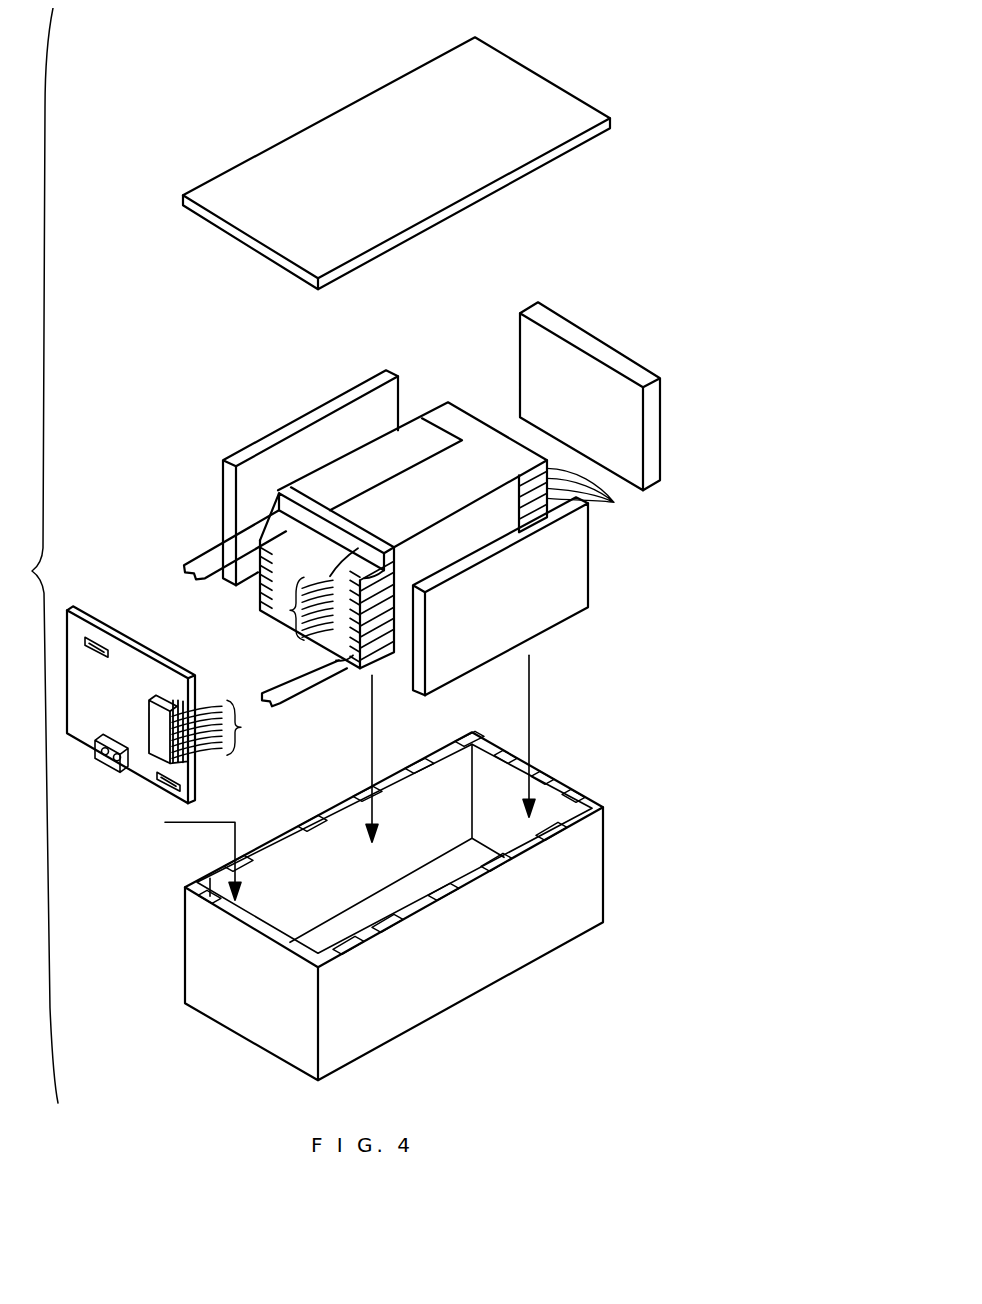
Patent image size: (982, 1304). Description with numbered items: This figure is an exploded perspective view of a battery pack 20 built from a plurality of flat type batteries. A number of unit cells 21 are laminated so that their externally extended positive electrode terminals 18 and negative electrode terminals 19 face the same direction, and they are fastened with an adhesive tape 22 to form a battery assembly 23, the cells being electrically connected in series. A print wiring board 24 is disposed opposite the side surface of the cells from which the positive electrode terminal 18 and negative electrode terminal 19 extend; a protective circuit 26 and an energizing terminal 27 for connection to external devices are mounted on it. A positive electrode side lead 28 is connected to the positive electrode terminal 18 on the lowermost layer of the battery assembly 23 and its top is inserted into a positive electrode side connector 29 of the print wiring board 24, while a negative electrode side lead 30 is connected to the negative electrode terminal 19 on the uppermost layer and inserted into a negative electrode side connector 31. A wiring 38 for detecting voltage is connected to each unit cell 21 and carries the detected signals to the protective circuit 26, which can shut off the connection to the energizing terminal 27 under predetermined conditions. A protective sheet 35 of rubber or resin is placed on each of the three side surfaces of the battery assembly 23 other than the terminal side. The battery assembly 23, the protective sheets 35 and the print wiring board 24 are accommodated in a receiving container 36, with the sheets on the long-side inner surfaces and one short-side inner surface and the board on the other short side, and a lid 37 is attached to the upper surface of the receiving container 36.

The battery pack 20 is at (191, 56).
The lid 37 is at (551, 105).
The protective sheet 35 is at (272, 438).
The adhesive tape 22 is at (461, 478).
The battery assembly 23 is at (343, 446).
The negative electrode terminal 19 is at (257, 518).
The positive electrode terminal 18 is at (323, 563).
The negative electrode side lead 30 is at (186, 557).
The positive electrode side lead 28 is at (291, 688).
The wiring for detecting voltage 38 is at (279, 610).
The unit cell 21 is at (595, 492).
The print wiring board 24 is at (87, 610).
The negative electrode side connector 31 is at (94, 643).
The protective circuit 26 is at (152, 695).
The energizing terminal 27 is at (106, 770).
The positive electrode side connector 29 is at (181, 784).
The receiving container 36 is at (586, 872).